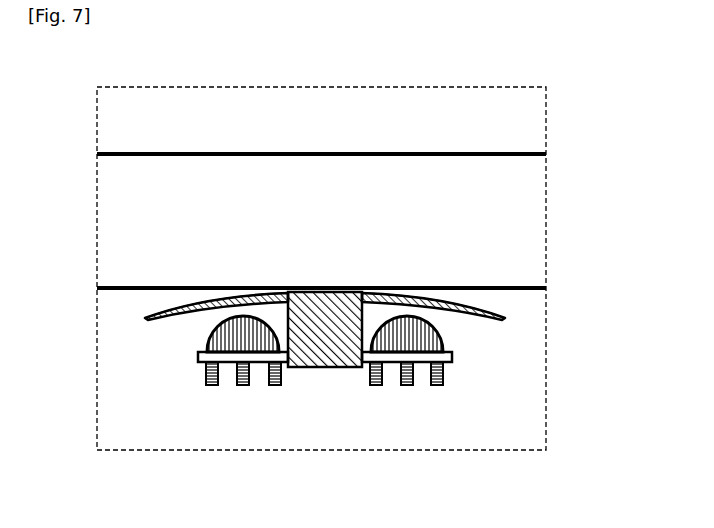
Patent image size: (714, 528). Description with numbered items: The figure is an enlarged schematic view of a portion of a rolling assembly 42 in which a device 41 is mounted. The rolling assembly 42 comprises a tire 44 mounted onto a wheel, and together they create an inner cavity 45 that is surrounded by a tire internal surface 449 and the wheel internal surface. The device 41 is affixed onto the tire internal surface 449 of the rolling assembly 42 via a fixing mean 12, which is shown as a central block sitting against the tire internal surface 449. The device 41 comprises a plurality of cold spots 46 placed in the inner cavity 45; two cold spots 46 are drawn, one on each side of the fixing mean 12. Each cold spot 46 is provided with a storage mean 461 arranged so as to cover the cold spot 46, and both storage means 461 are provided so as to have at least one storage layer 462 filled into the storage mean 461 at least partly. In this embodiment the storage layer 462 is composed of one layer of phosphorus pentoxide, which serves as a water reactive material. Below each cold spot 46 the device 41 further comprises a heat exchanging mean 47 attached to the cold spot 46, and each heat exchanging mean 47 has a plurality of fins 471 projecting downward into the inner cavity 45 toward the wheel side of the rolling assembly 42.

The device 41 is at (476, 421).
The rolling assembly 42 is at (500, 137).
The tire 44 is at (173, 187).
The tire internal surface 449 is at (523, 288).
The inner cavity 45 is at (186, 442).
The cold spot 46 is at (225, 340).
The storage mean 461 is at (170, 303).
The storage layer 462 is at (252, 292).
The heat exchanging mean 47 is at (198, 357).
The fins 471 is at (275, 385).
The fixing mean 12 is at (327, 370).